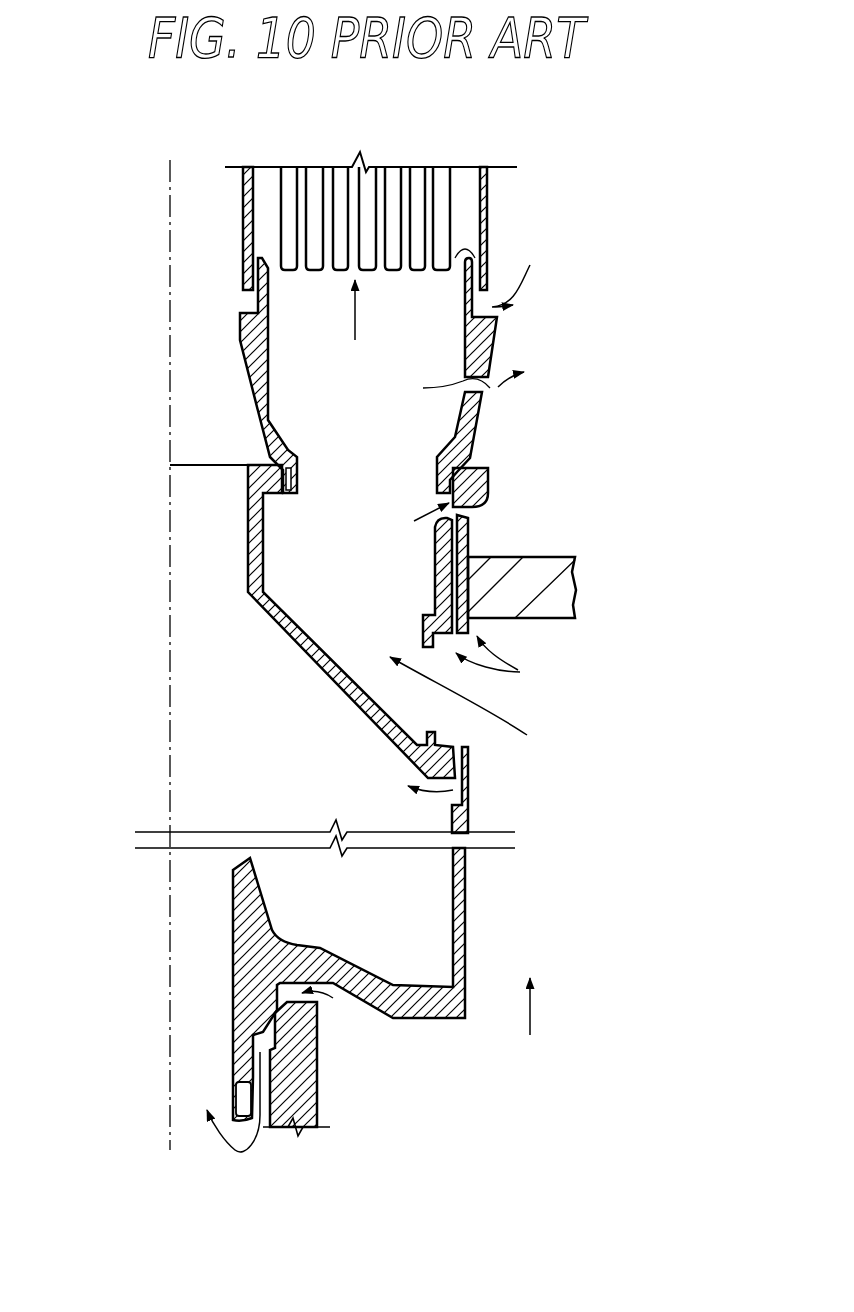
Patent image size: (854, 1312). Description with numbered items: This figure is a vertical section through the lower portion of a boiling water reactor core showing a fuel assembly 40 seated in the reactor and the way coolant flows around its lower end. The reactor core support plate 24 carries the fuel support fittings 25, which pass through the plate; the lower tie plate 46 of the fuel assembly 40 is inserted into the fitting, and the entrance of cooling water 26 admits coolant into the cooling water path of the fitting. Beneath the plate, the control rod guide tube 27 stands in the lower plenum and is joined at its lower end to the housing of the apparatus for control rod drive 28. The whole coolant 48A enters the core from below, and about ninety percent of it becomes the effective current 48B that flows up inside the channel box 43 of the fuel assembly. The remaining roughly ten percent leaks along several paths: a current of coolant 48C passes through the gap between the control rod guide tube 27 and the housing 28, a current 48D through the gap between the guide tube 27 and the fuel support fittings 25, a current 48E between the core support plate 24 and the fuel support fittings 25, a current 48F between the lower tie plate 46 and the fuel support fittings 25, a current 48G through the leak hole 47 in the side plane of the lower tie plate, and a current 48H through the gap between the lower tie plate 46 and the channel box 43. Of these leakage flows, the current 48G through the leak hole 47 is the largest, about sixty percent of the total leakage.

The reactor core support plate 24 is at (520, 568).
The fuel support fittings 25 is at (478, 497).
The entrance of cooling water 26 is at (424, 656).
The control rod guide tube 27 is at (470, 785).
The housing of apparatus for control rod drive 28 is at (310, 1065).
The fuel assembly 40 is at (228, 233).
The channel box 43 is at (489, 208).
The lower tie plate 46 is at (505, 323).
The leak hole 47 is at (463, 381).
The whole coolant 48A is at (535, 1030).
The effective current 48B is at (355, 305).
The current of coolant 48C is at (247, 1140).
The current of coolant 48D is at (453, 792).
The current of coolant 48E is at (518, 670).
The current of coolant 48F is at (425, 508).
The current of coolant 48G is at (503, 385).
The current of coolant 48H is at (525, 274).